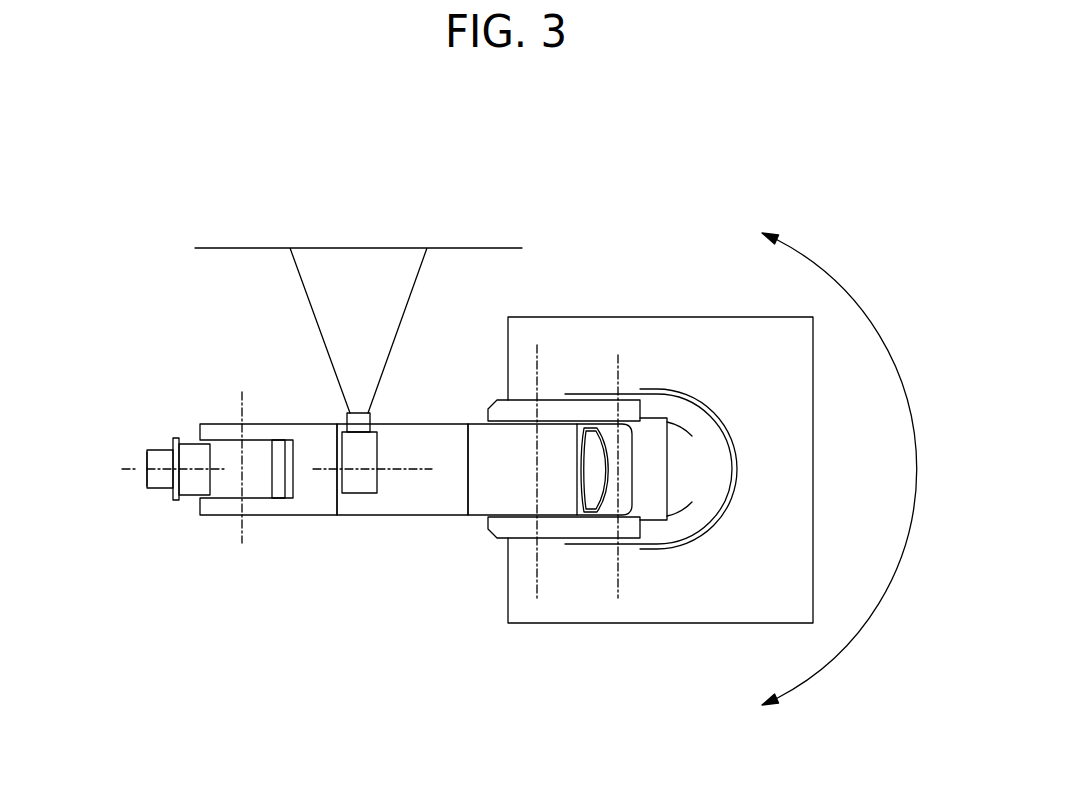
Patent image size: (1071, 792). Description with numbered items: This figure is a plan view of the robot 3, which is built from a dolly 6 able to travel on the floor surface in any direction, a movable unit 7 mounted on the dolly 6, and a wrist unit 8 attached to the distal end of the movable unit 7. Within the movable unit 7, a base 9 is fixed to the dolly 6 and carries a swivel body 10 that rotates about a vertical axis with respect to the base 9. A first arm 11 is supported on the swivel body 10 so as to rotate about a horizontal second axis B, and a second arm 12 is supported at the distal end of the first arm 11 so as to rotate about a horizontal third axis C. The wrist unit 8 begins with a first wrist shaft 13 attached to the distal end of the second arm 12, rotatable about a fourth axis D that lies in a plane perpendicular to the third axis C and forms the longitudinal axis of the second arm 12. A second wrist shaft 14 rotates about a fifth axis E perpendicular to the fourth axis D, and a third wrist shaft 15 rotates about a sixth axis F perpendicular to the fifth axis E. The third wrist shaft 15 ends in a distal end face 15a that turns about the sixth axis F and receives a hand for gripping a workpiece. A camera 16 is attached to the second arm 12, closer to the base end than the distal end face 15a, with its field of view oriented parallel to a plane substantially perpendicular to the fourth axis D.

The robot 3 is at (676, 226).
The dolly 6 is at (687, 623).
The movable unit 7 is at (472, 394).
The wrist unit 8 is at (109, 433).
The base 9 is at (705, 398).
The swivel body 10 is at (597, 395).
The first arm 11 is at (522, 400).
The second arm 12 is at (423, 517).
The first wrist shaft 13 is at (293, 517).
The second wrist shaft 14 is at (278, 442).
The third wrist shaft 15 is at (188, 500).
The distal end face 15a is at (130, 470).
The camera 16 is at (360, 496).
The second axis B is at (617, 583).
The third axis C is at (537, 570).
The fourth axis D is at (403, 468).
The fifth axis E is at (242, 543).
The sixth axis F is at (143, 478).